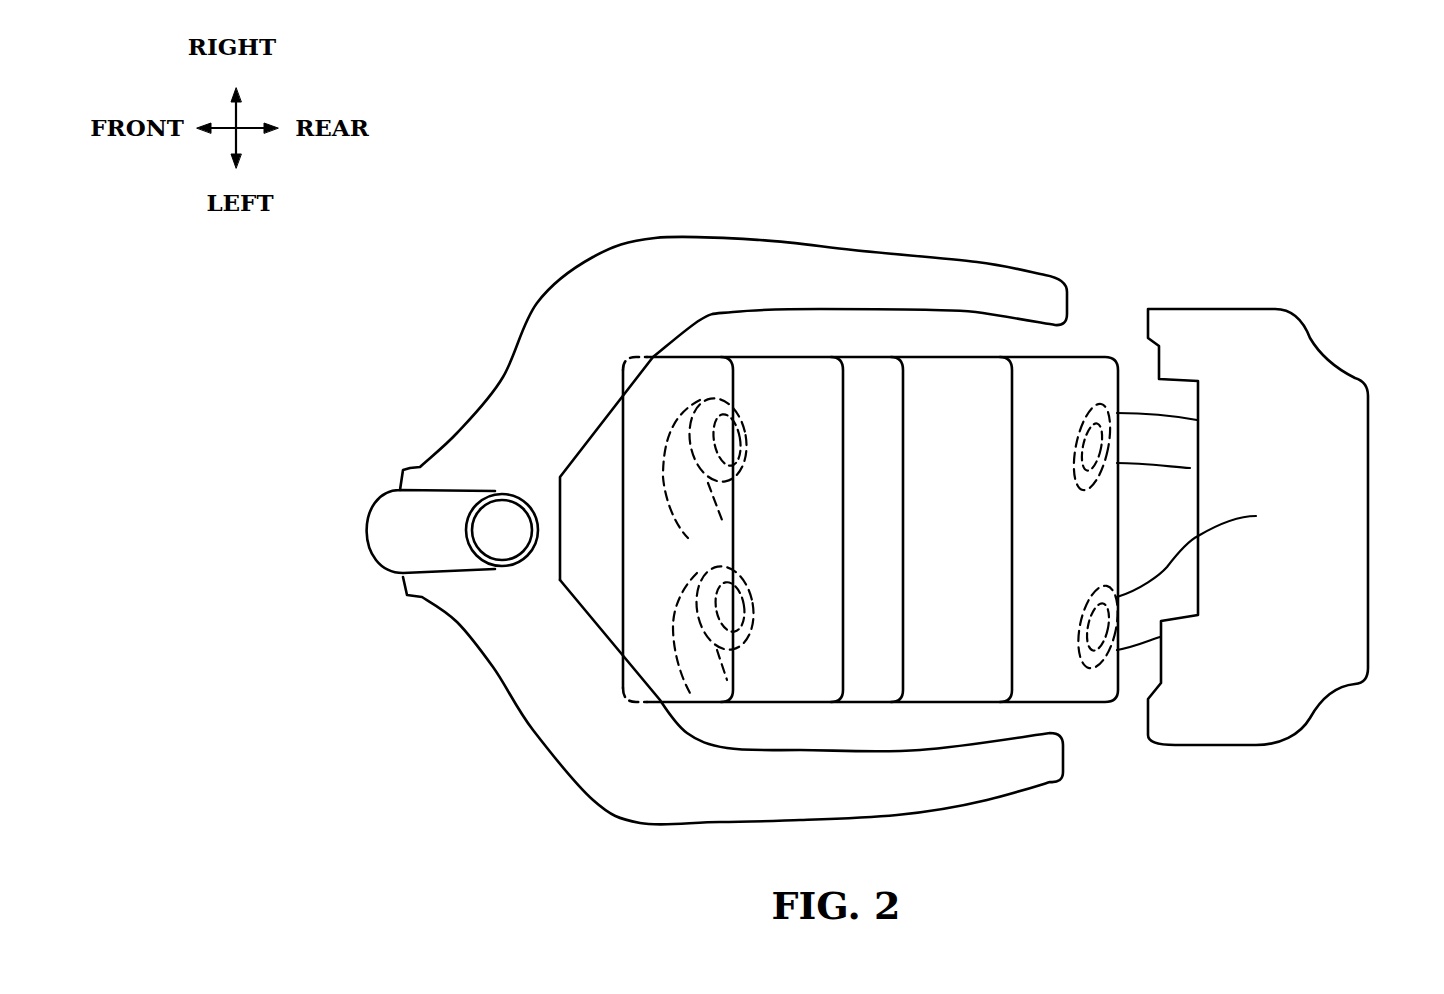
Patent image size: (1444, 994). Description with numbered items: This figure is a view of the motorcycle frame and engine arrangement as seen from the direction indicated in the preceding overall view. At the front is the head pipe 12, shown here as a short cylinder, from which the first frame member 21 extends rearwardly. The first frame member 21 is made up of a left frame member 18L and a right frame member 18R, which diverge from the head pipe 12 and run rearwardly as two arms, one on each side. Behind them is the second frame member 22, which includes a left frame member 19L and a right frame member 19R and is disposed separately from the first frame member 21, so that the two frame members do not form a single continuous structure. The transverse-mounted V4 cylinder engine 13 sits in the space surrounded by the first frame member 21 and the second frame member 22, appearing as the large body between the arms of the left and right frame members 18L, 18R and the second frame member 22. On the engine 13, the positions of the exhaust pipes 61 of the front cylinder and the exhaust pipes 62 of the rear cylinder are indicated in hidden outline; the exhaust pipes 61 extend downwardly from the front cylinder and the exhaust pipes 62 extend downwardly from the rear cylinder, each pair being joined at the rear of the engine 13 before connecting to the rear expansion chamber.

The head pipe 12 is at (377, 529).
The engine 13 is at (977, 356).
The right frame member 18R is at (735, 250).
The left frame member 18L is at (702, 812).
The right frame member 19R is at (1157, 318).
The left frame member 19L is at (1152, 745).
The first frame member 21 is at (733, 506).
The second frame member 22 is at (1225, 516).
The exhaust pipes 61 is at (668, 495).
The exhaust pipes 62 is at (1163, 466).